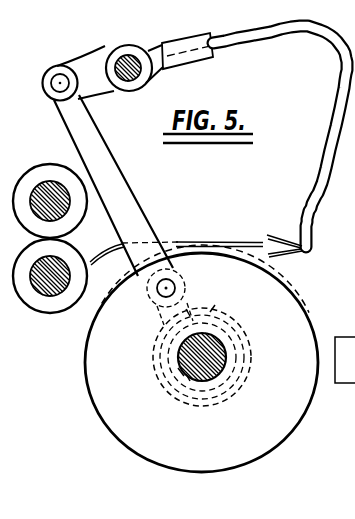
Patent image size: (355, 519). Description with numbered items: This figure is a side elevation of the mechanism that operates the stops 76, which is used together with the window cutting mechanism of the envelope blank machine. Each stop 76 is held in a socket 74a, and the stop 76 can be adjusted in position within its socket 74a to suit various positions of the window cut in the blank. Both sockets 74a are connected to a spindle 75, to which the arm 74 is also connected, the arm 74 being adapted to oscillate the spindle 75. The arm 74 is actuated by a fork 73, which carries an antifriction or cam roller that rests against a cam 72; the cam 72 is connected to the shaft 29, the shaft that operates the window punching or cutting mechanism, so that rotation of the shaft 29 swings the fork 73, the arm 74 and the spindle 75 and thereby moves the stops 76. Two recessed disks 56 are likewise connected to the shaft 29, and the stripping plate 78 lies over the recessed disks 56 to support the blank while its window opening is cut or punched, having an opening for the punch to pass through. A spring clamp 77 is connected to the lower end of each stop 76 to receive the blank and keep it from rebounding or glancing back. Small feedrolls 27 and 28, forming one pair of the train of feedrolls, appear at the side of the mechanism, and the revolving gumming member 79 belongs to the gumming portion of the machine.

The feedroll 27 is at (50, 201).
The feedroll 28 is at (50, 278).
The shaft operating the window punching mechanism 29 is at (213, 357).
The recessed disk 56 is at (201, 362).
The cam 72 is at (250, 306).
The fork 73 is at (113, 185).
The arm 74 is at (79, 73).
The socket 74a is at (204, 18).
The spindle 75 is at (136, 55).
The stop 76 is at (327, 38).
The spring clamp 77 is at (293, 253).
The stripping plate 78 is at (116, 245).
The revolving gumming member 79 is at (166, 289).